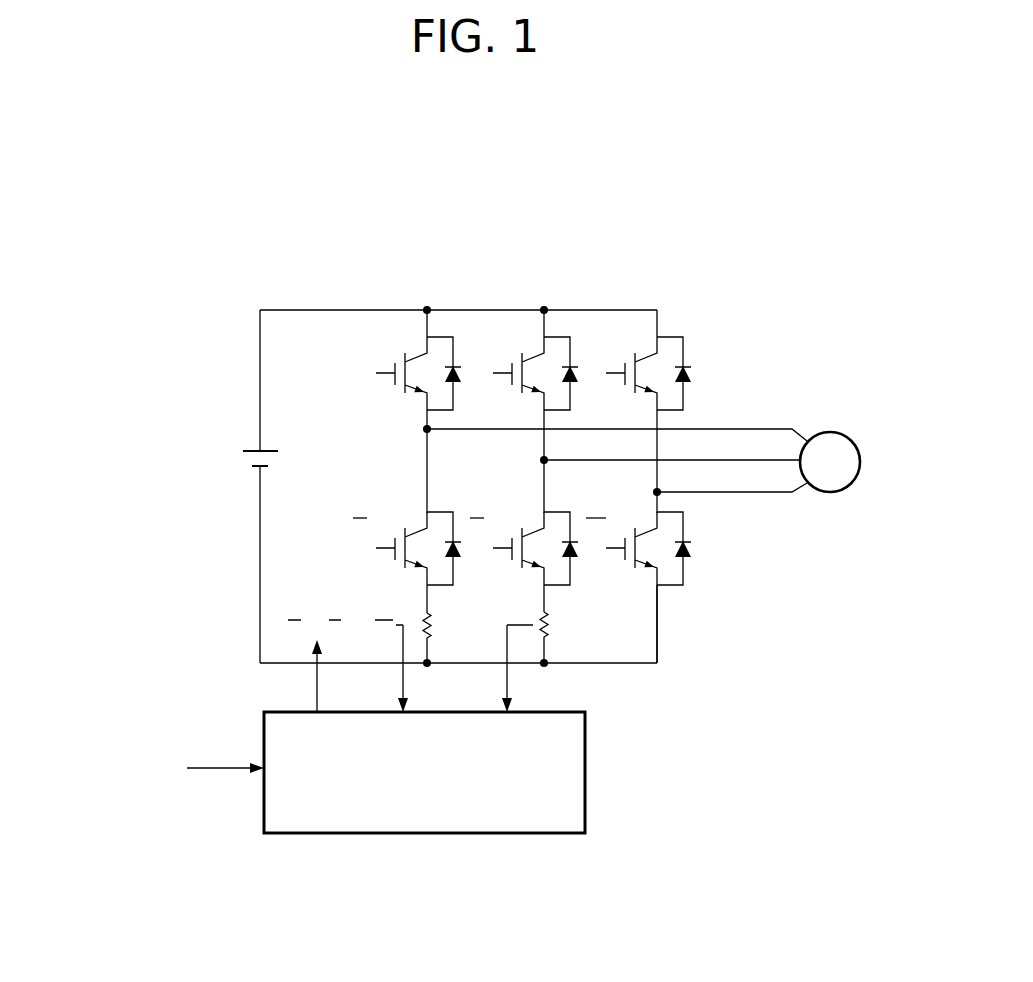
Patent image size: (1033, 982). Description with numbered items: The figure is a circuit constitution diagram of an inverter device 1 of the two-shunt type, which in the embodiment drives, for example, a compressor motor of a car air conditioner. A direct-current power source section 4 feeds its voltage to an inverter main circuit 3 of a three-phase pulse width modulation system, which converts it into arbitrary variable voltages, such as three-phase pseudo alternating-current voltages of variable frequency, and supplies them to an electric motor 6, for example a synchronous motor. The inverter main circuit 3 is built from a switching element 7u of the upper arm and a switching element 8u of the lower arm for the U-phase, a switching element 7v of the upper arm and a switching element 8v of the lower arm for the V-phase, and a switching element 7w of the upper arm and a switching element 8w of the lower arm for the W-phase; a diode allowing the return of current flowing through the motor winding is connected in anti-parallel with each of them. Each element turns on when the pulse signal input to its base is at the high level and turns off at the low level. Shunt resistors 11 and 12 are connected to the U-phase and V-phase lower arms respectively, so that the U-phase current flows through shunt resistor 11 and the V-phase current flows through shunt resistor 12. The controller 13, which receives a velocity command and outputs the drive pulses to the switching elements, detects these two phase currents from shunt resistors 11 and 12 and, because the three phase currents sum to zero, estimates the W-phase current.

The inverter device 1 is at (690, 310).
The inverter main circuit 3 is at (550, 275).
The direct-current power source section 4 is at (245, 450).
The electric motor 6 is at (830, 432).
The switching element of upper arm for U-phase 7u is at (400, 345).
The switching element of upper arm for V-phase 7v is at (518, 345).
The switching element of upper arm for W-phase 7w is at (628, 345).
The switching element of lower arm for U-phase 8u is at (398, 525).
The switching element of lower arm for V-phase 8v is at (512, 527).
The switching element of lower arm for W-phase 8w is at (627, 575).
The shunt resistor 11 is at (440, 628).
The shunt resistor 12 is at (557, 628).
The controller 13 is at (585, 772).